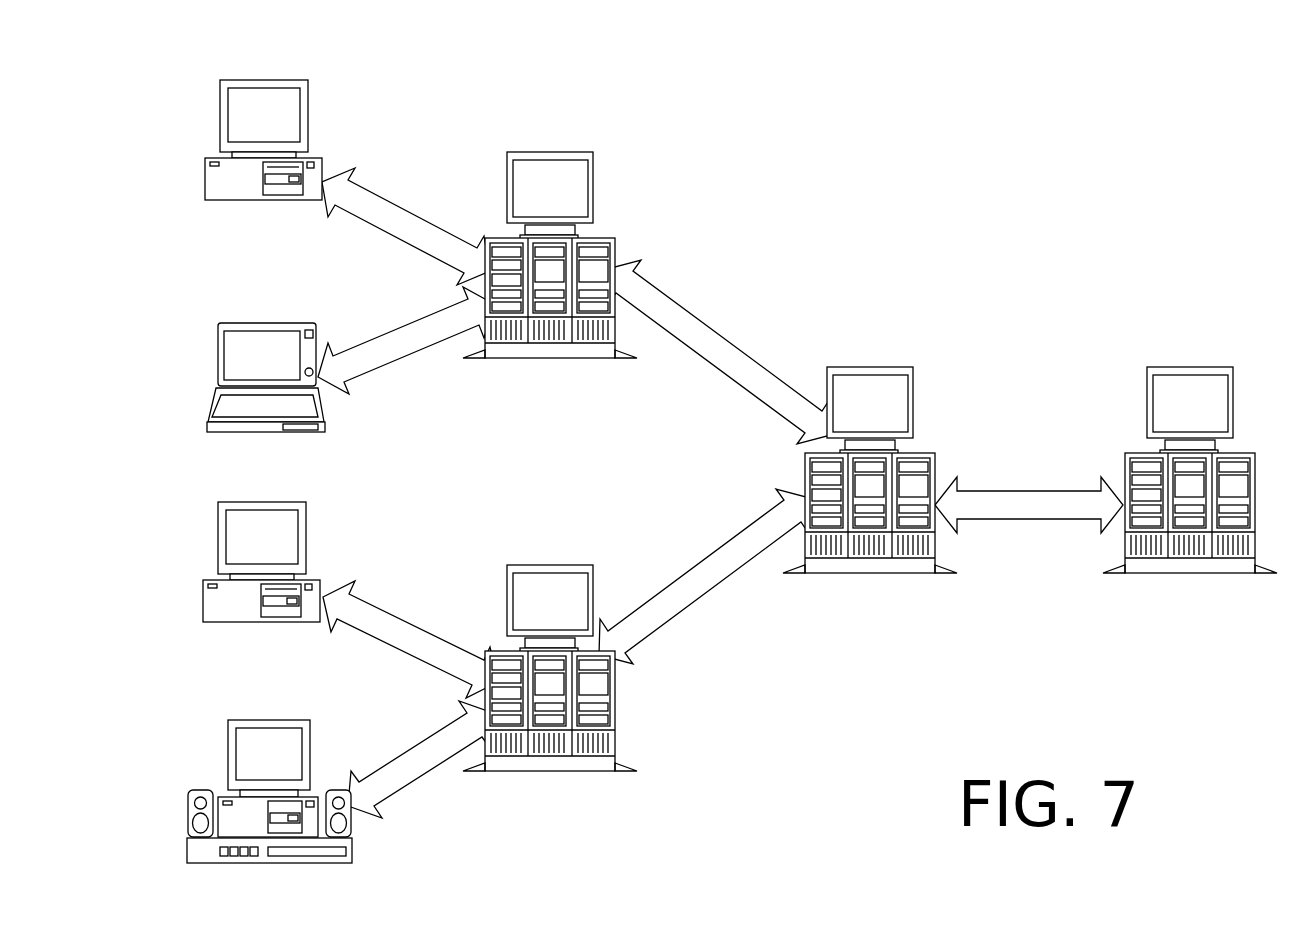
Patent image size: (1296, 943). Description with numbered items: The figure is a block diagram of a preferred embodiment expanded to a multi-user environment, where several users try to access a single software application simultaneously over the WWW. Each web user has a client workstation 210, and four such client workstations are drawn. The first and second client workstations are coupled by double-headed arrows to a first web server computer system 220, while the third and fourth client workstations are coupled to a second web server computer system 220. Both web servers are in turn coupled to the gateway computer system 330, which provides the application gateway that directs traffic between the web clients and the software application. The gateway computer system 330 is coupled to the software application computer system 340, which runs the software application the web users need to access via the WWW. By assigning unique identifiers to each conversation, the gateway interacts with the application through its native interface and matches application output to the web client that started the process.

The client workstation 210 is at (273, 80).
The web server computer system 220 is at (552, 152).
The gateway computer system 330 is at (873, 370).
The software application computer system 340 is at (1188, 370).